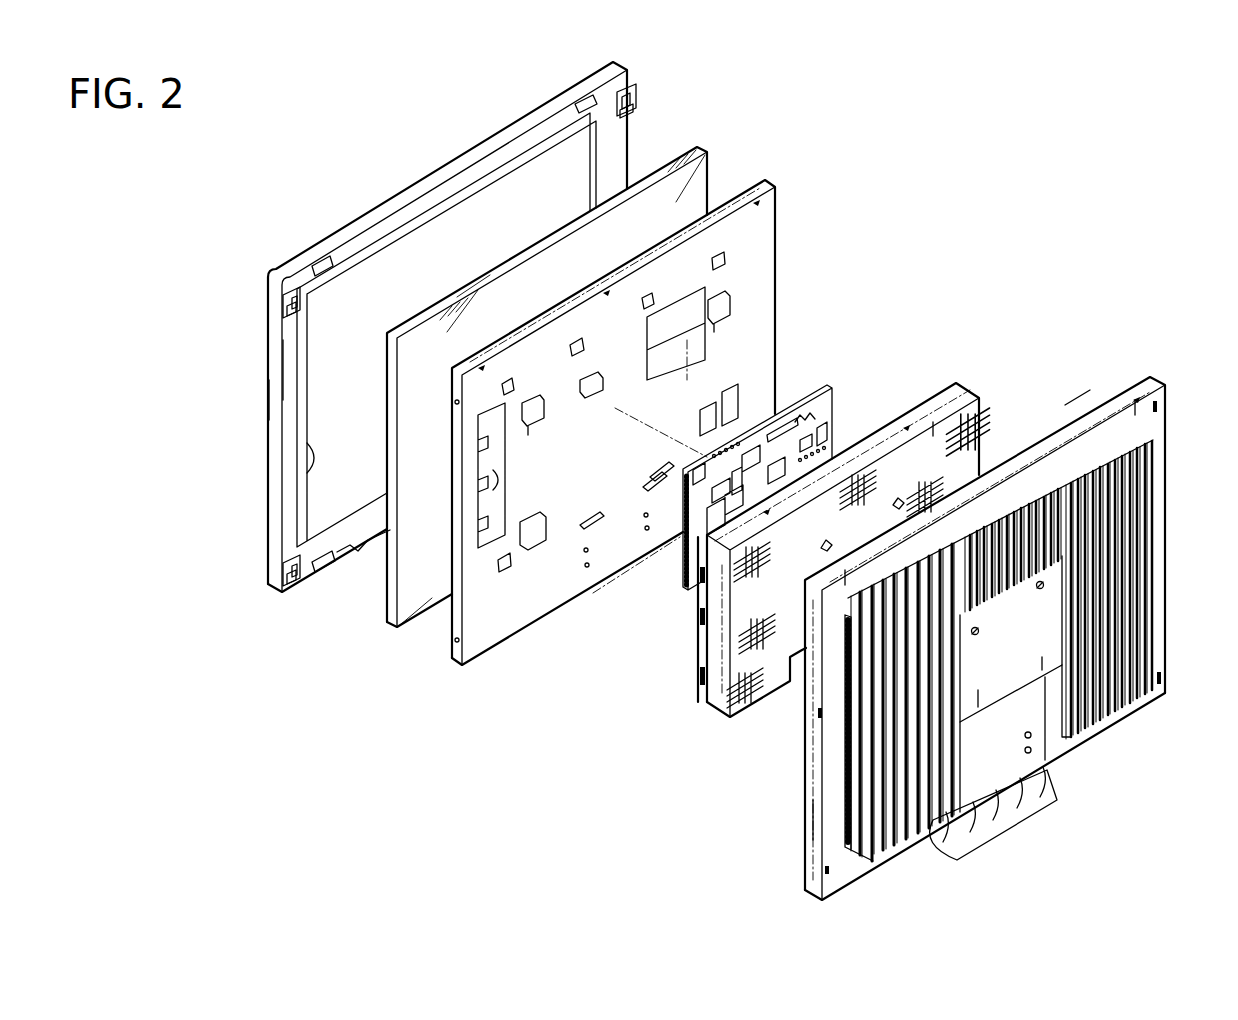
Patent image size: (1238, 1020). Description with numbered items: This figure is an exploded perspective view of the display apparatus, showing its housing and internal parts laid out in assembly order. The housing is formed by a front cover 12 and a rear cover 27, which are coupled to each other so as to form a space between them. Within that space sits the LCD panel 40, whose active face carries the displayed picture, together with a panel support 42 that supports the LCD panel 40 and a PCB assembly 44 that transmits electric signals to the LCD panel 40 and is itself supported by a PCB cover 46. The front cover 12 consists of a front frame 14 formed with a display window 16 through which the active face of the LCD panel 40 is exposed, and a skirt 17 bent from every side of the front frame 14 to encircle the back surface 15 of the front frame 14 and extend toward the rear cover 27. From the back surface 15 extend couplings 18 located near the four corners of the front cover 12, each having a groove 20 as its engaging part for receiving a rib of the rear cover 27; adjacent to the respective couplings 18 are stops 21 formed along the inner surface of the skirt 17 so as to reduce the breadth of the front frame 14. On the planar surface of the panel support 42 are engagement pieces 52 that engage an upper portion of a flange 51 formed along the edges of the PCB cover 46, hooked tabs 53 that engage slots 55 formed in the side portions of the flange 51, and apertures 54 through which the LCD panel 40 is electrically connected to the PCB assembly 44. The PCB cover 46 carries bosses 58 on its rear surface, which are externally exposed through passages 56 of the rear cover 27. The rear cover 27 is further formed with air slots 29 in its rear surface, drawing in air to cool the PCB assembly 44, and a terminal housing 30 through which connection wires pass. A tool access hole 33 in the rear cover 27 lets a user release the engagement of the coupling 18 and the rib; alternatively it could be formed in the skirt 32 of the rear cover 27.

The front cover 12 is at (214, 336).
The front frame 14 is at (268, 345).
The back surface 15 is at (293, 372).
The display window 16 is at (306, 458).
The skirt 17 is at (276, 398).
The coupling 18 is at (285, 298).
The groove 20 is at (292, 296).
The stop 21 is at (316, 262).
The rear cover 27 is at (991, 638).
The air slots 29 is at (1145, 626).
The terminal housing 30 is at (1024, 824).
The skirt 32 is at (820, 818).
The tool access hole 33 is at (1160, 406).
The LCD panel 40 is at (704, 150).
The panel support 42 is at (778, 242).
The PCB assembly 44 is at (823, 397).
The PCB cover 46 is at (963, 392).
The flange 51 is at (1072, 418).
The engagement pieces 52 is at (722, 256).
The hooked tabs 53 is at (480, 546).
The apertures 54 is at (540, 430).
The slots 55 is at (700, 628).
The passages 56 is at (1045, 585).
The bosses 58 is at (904, 503).